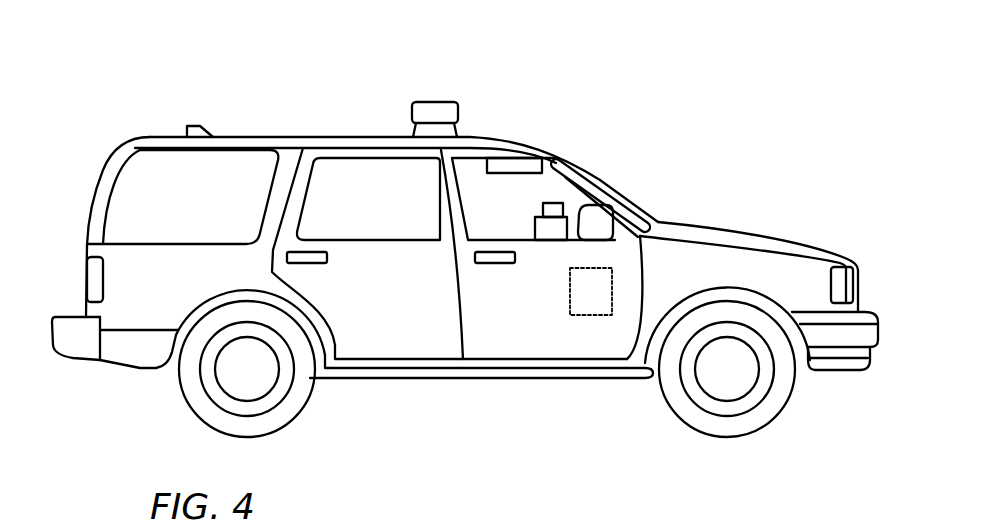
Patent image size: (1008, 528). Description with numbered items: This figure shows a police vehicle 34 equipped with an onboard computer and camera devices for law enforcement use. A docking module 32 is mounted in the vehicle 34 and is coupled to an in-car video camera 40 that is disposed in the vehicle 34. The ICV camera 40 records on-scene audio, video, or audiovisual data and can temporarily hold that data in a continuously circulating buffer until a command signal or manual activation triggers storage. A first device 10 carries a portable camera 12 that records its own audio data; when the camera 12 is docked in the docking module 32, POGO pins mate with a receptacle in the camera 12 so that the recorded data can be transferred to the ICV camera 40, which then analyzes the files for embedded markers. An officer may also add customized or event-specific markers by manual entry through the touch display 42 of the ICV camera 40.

The first device 10 is at (543, 211).
The camera 12 is at (557, 201).
The docking module 32 is at (567, 228).
The police vehicle 34 is at (163, 136).
The in-car video camera 40 is at (503, 163).
The touch display 42 is at (582, 317).